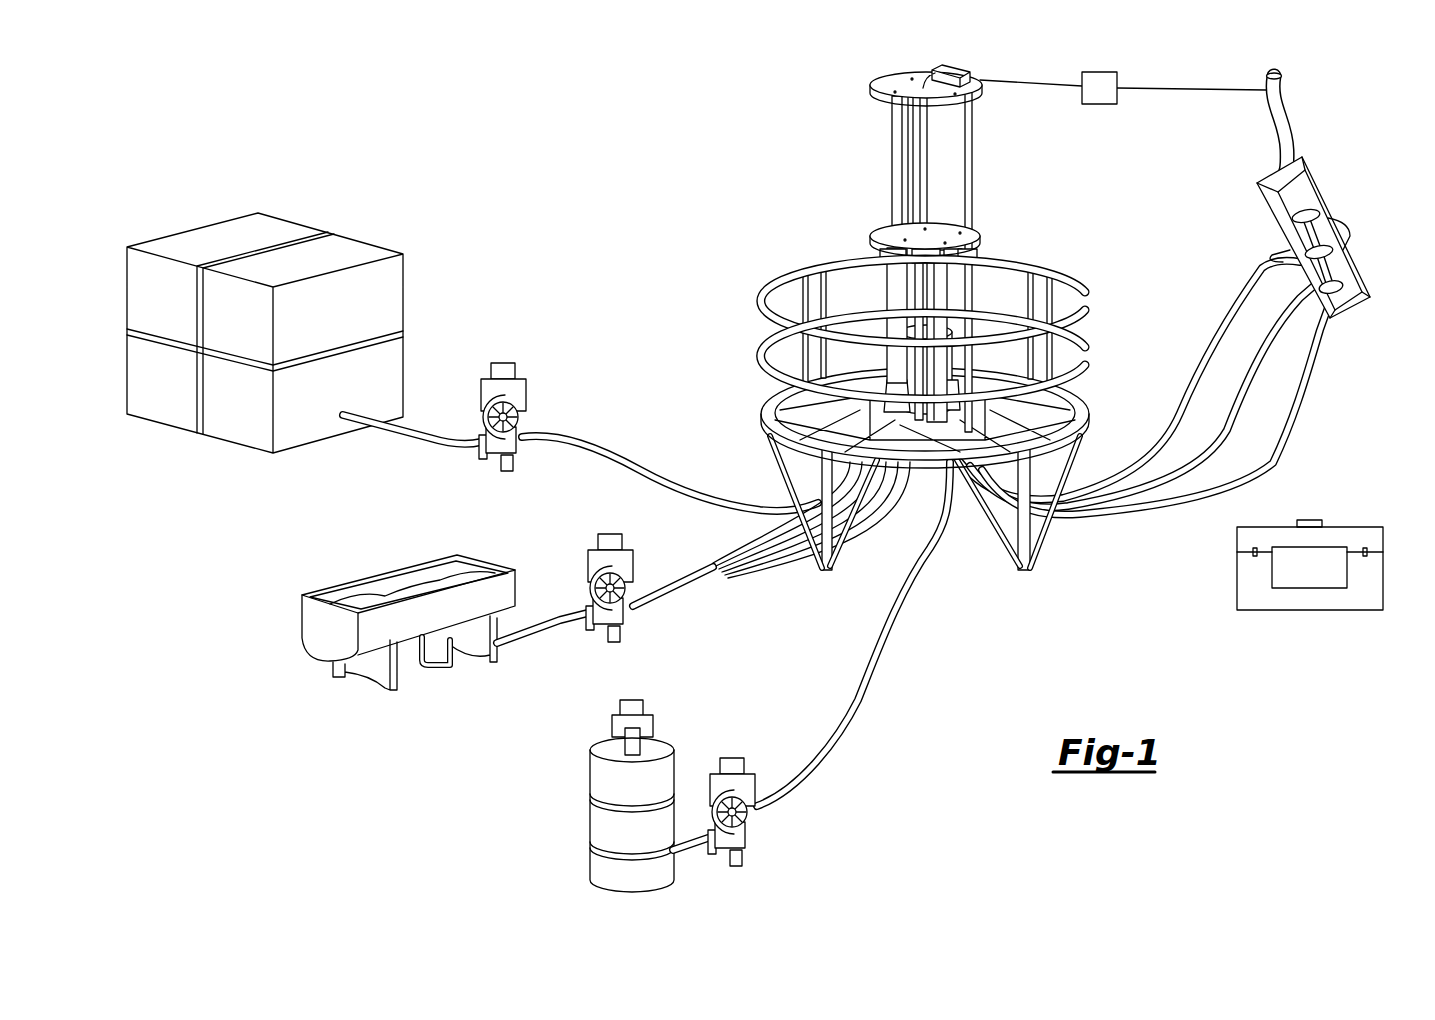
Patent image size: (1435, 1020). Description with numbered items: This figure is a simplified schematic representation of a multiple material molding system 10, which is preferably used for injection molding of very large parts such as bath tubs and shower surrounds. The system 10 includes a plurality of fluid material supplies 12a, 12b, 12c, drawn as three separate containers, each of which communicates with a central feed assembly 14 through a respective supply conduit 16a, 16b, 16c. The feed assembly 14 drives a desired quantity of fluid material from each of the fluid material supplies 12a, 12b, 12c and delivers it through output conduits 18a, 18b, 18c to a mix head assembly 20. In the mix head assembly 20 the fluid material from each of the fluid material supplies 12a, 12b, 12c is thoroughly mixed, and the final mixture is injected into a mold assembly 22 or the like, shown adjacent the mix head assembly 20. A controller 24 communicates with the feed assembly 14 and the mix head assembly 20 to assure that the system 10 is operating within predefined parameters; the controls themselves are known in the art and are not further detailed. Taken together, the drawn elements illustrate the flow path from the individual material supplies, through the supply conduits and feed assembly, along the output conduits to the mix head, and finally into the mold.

The multiple material molding system 10 is at (622, 240).
The fluid material supply 12a is at (343, 248).
The fluid material supply 12b is at (318, 638).
The fluid material supply 12c is at (610, 773).
The feed assembly 14 is at (828, 235).
The supply conduit 16a is at (558, 440).
The supply conduit 16b is at (665, 590).
The supply conduit 16c is at (812, 765).
The output conduit 18a is at (1210, 292).
The output conduit 18b is at (1205, 358).
The output conduit 18c is at (1292, 400).
The mix head assembly 20 is at (1289, 195).
The mold assembly 22 is at (1353, 600).
The controller 24 is at (1111, 99).